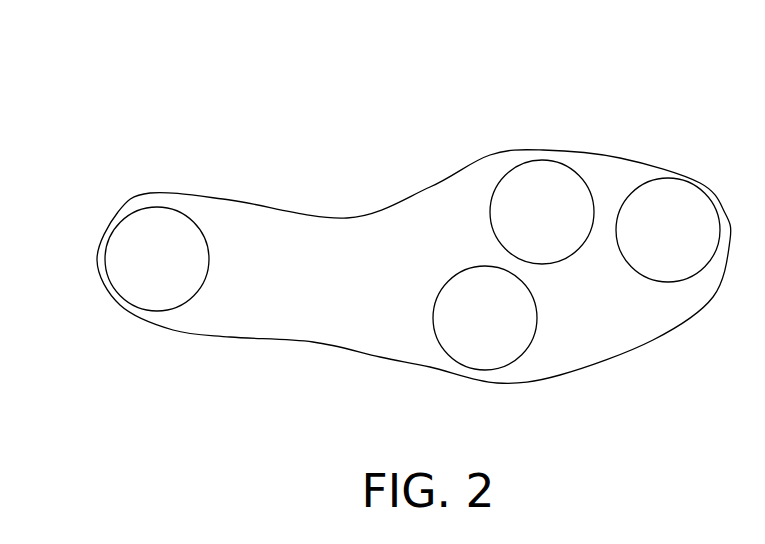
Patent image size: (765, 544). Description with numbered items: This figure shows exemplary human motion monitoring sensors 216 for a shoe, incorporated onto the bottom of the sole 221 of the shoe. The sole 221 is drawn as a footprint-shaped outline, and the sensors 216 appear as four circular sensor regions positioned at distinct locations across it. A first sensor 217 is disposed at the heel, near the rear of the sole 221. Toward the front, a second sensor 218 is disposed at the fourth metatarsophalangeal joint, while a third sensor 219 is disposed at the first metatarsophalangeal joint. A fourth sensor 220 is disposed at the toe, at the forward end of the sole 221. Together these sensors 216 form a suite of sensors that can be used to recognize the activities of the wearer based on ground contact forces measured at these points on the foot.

The human motion monitoring sensors 216 is at (180, 82).
The first sensor 217 is at (157, 259).
The second sensor 218 is at (485, 318).
The third sensor 219 is at (542, 212).
The fourth sensor 220 is at (668, 230).
The sole 221 is at (278, 208).